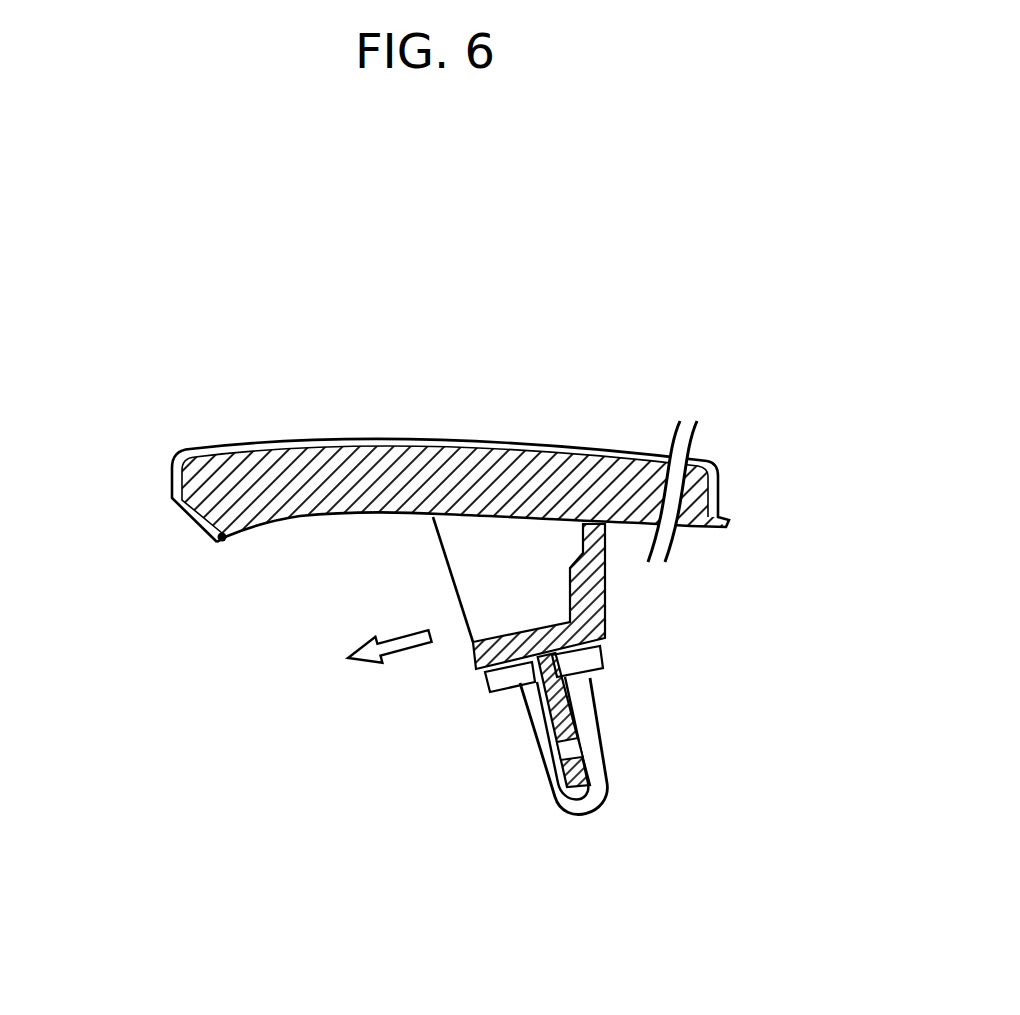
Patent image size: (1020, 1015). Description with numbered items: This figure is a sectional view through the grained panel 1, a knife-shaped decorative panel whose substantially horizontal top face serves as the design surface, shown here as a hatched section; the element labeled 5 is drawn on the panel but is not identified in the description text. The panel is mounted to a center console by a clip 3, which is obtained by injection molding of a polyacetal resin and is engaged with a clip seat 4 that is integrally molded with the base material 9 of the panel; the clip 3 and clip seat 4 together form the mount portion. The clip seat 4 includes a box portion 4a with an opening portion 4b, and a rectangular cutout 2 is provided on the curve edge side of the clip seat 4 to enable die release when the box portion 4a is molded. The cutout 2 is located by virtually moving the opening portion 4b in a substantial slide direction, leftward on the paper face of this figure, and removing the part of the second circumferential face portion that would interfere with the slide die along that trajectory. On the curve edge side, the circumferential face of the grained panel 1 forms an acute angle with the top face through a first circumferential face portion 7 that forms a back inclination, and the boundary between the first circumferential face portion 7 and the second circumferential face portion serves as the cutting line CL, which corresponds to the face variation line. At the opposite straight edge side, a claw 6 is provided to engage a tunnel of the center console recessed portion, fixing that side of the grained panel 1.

The grained panel 1 is at (437, 447).
The cutout 2 is at (303, 667).
The clip 3 is at (548, 763).
The clip seat 4 is at (560, 720).
The box portion 4a is at (557, 590).
The opening portion 4b is at (460, 623).
The top surface 5 is at (437, 437).
The claw 6 is at (727, 528).
The first circumferential face portion 7 is at (197, 522).
The base material 9 is at (340, 513).
The cutting line CL is at (222, 541).